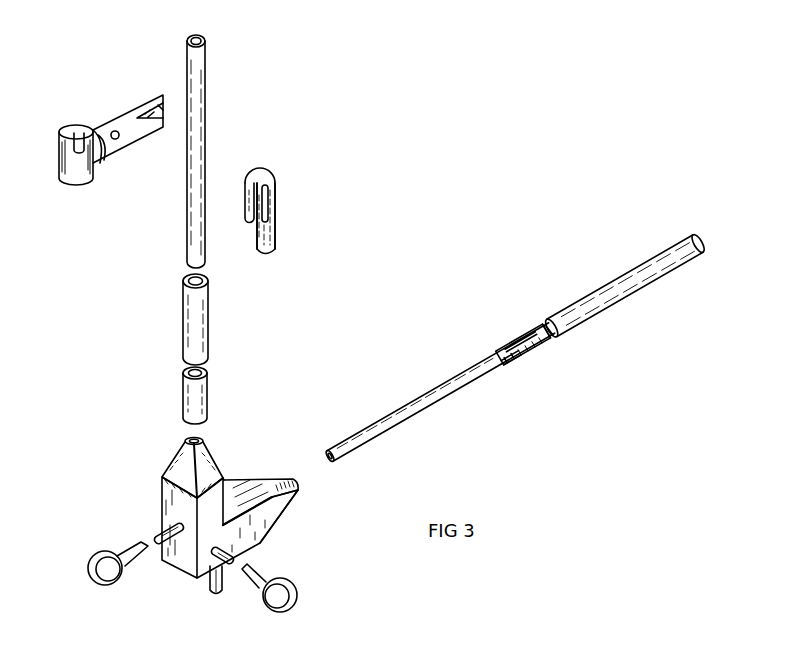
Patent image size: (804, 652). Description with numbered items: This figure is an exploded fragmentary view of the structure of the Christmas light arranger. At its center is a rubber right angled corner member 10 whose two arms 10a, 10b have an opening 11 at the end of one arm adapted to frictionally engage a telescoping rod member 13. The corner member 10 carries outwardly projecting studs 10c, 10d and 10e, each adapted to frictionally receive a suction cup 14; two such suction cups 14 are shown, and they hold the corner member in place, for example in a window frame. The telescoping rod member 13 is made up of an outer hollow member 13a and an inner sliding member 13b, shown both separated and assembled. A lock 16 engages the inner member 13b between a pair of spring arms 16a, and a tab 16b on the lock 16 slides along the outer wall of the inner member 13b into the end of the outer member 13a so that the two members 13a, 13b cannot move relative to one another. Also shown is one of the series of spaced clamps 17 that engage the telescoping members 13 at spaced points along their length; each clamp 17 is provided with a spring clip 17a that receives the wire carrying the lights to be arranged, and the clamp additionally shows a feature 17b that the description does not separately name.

The corner member 10 is at (182, 563).
The arm 10a is at (177, 457).
The arm 10b is at (263, 530).
The stud 10c is at (163, 530).
The stud 10d is at (215, 593).
The stud 10e is at (232, 567).
The opening 11 is at (198, 438).
The telescoping rod member 13 is at (403, 422).
The outer hollow member 13a is at (207, 303).
The inner sliding member 13b is at (197, 125).
The suction cup 14 is at (93, 582).
The lock 16 is at (273, 210).
The spring arm 16a is at (247, 193).
The tab 16b is at (275, 247).
The clamp 17 is at (102, 128).
The spring clip 17a is at (160, 122).
The lever hole 17b is at (115, 140).